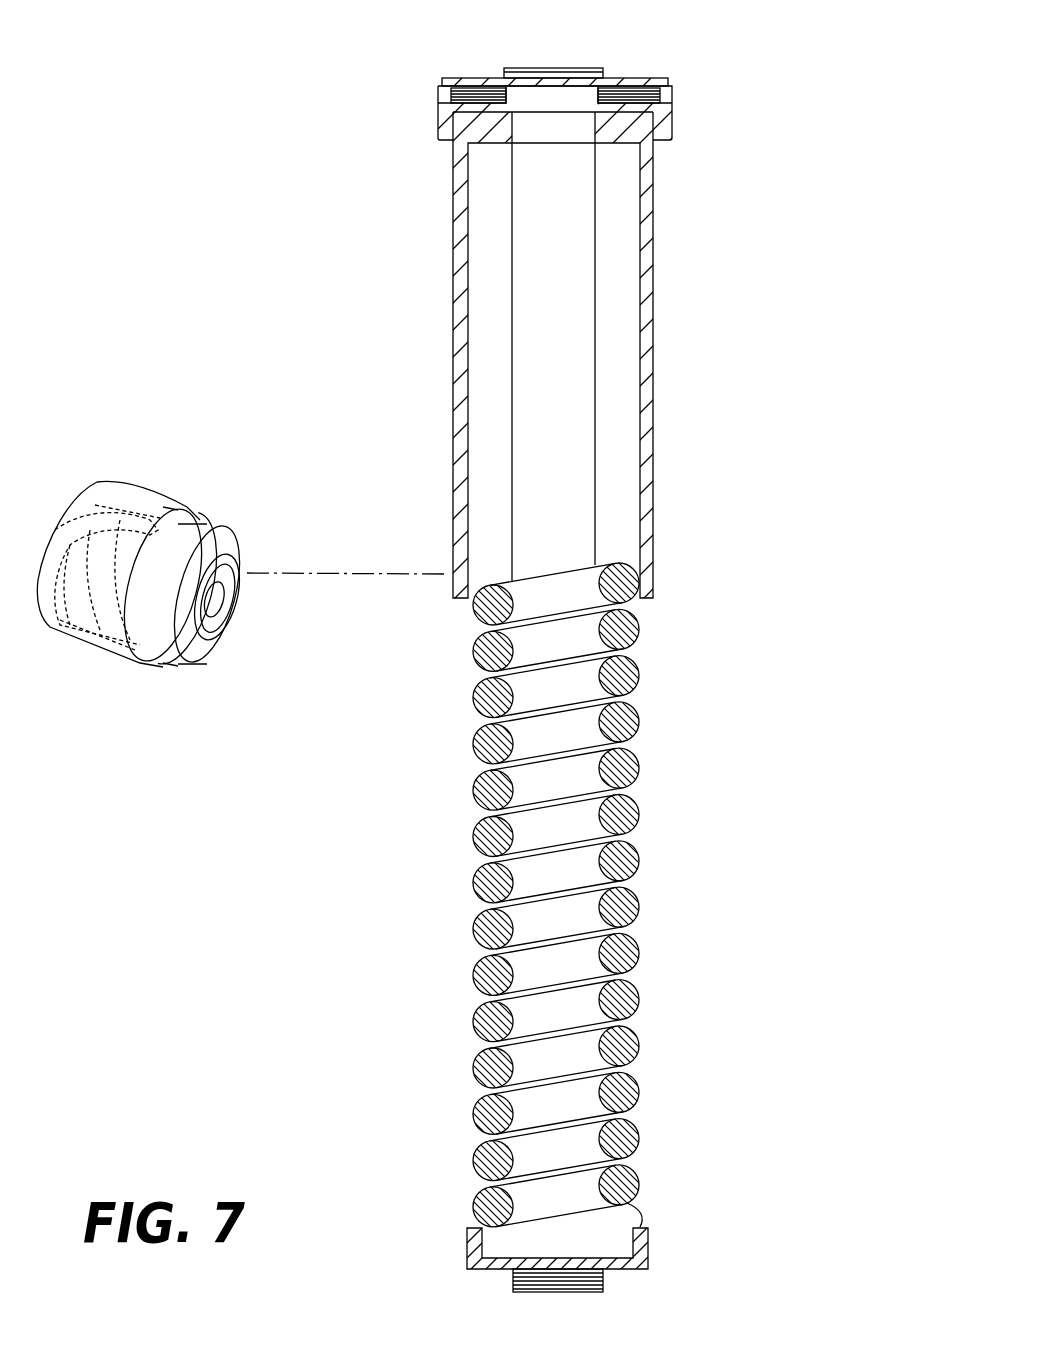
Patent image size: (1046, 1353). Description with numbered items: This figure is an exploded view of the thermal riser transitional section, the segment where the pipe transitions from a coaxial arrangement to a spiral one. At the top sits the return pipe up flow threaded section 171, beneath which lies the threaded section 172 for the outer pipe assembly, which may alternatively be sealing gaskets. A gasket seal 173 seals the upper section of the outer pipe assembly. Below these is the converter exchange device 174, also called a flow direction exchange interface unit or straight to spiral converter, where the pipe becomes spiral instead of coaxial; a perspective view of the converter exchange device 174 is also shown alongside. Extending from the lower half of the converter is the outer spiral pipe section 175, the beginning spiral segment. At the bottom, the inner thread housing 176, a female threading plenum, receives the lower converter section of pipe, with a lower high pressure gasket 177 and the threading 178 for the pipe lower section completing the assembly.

The return pipe up flow threaded section 171 is at (592, 65).
The threaded section for the outer pipe assembly 172 is at (672, 80).
The gasket seal 173 is at (660, 95).
The converter exchange device 174 is at (672, 572).
The outer spiral pipe section 175 is at (640, 838).
The inner thread housing 176 is at (617, 1245).
The lower high pressure gasket 177 is at (622, 1275).
The threading for a pipe lower section 178 is at (540, 1280).